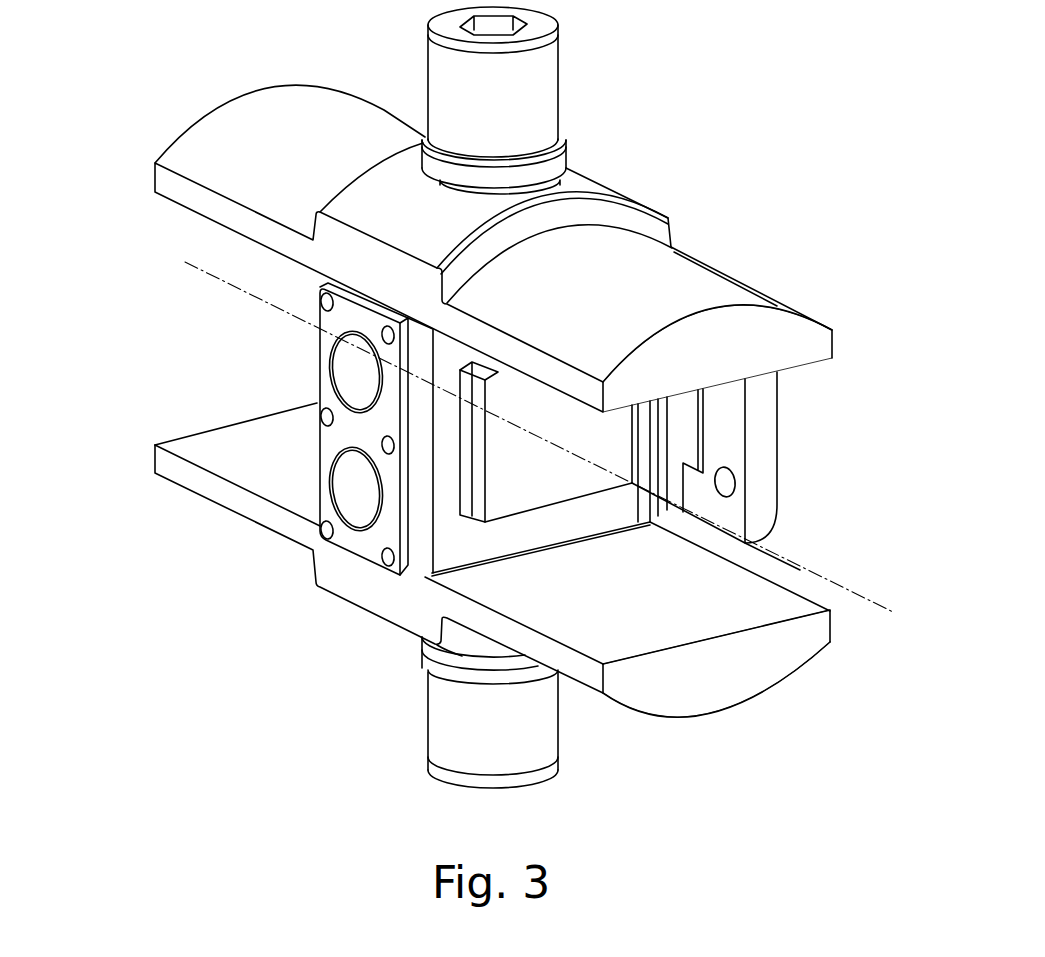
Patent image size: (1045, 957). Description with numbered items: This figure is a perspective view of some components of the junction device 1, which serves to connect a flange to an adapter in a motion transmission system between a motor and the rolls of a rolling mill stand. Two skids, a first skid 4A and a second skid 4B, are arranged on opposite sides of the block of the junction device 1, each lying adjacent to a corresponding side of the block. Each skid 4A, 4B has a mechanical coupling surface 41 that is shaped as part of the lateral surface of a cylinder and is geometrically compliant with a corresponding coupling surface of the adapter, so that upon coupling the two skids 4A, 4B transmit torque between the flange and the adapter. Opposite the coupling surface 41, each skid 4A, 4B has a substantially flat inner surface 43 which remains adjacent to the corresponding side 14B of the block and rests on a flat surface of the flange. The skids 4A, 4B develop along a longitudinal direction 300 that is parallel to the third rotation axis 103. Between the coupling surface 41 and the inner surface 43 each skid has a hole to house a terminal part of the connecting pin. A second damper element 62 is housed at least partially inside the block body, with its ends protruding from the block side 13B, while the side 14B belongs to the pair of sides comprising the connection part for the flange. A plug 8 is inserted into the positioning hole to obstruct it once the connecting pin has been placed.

The junction device 1 is at (420, 497).
The first skid 4A is at (688, 252).
The second skid 4B is at (673, 675).
The plug 8 is at (540, 92).
The side of the block 13B is at (343, 323).
The side of the block 14B is at (452, 538).
The coupling surface 41 is at (703, 298).
The inner surface 43 is at (818, 362).
The second damper element 62 is at (360, 393).
The third rotation axis 103 is at (870, 595).
The longitudinal direction 300 is at (137, 155).